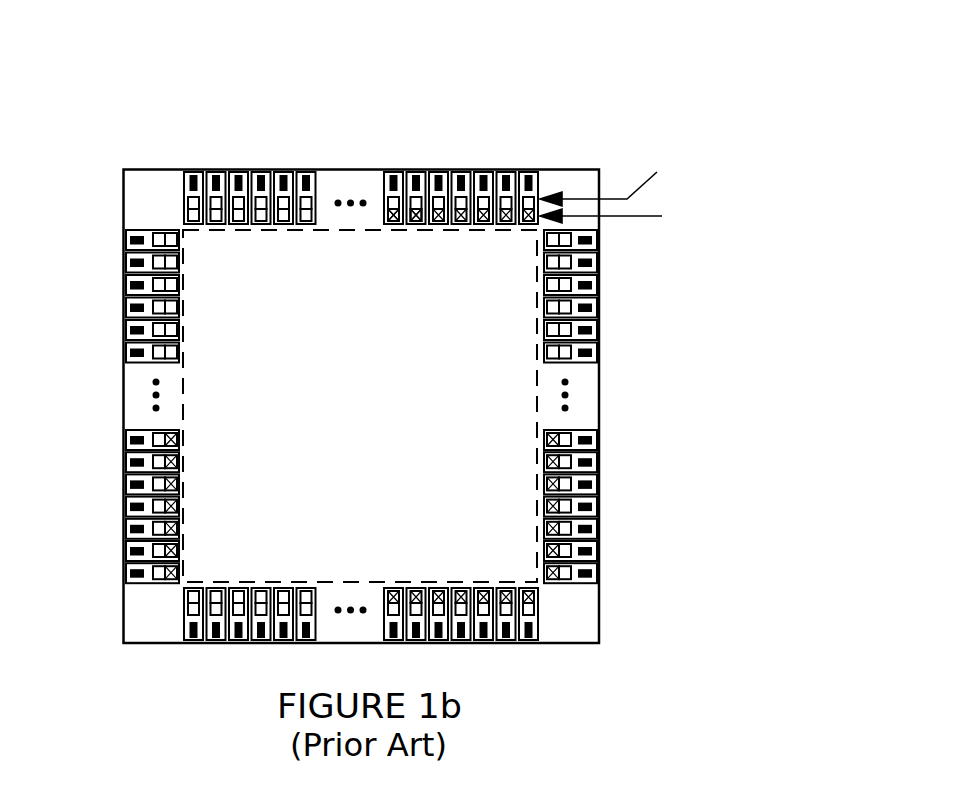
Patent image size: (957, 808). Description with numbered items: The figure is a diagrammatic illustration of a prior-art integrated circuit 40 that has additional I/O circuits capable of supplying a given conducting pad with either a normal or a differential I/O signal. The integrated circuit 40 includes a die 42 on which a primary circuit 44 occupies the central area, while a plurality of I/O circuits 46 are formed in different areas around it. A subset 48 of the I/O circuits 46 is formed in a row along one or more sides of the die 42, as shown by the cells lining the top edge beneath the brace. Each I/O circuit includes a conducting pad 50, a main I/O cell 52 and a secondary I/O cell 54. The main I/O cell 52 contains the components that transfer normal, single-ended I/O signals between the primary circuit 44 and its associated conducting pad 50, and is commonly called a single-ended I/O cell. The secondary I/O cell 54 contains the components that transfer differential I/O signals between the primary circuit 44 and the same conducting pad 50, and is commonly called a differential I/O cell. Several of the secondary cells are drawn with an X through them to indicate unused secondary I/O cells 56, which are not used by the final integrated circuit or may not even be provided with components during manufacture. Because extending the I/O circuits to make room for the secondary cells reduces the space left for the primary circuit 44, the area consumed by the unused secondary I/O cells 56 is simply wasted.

The integrated circuit 40 is at (99, 127).
The die 42 is at (123, 210).
The primary circuit 44 is at (497, 423).
The I/O circuit 46 is at (192, 175).
The subset of I/O circuits 48 is at (548, 85).
The conducting pad 50 is at (213, 176).
The main I/O cell 52 is at (238, 198).
The secondary I/O cell 54 is at (283, 200).
The unused secondary I/O cell 56 is at (417, 210).